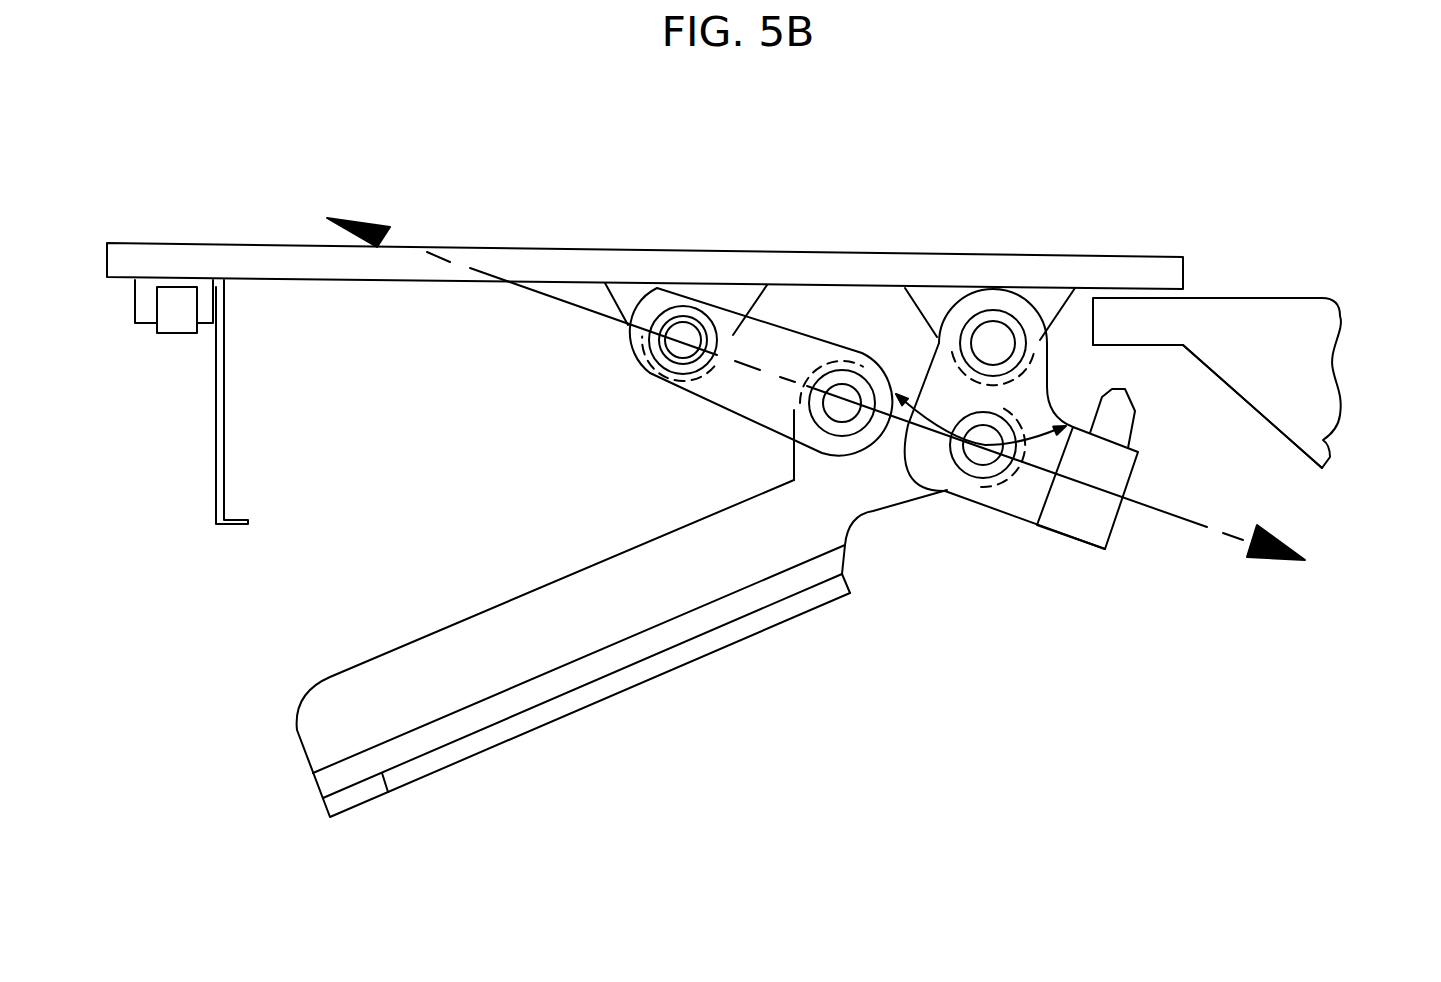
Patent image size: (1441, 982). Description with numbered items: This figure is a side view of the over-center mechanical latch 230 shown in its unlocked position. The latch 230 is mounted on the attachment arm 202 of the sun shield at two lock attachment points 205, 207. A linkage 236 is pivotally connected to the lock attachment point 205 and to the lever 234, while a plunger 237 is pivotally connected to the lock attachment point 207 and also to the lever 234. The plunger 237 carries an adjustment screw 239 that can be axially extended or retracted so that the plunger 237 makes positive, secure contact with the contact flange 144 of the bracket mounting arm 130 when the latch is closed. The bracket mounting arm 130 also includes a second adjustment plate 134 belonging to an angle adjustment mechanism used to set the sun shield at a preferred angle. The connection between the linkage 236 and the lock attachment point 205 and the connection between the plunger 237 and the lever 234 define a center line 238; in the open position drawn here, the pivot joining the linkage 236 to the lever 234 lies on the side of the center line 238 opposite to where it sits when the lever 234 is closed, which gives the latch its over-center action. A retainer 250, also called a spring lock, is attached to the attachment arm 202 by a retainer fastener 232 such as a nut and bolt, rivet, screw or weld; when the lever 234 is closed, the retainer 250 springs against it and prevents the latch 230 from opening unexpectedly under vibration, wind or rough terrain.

The bracket mounting arm 130 is at (1307, 358).
The second adjustment plate 134 is at (1312, 432).
The contact flange 144 is at (1145, 347).
The attachment arm 202 is at (605, 258).
The lock attachment point 205 is at (745, 295).
The lock attachment point 207 is at (1053, 302).
The over-center mechanical latch 230 is at (622, 645).
The retainer fastener 232 is at (150, 318).
The lever 234 is at (510, 732).
The linkage 236 is at (737, 407).
The plunger 237 is at (1040, 527).
The center line 238 is at (1197, 523).
The adjustment screw 239 is at (1120, 422).
The retainer 250 is at (225, 523).